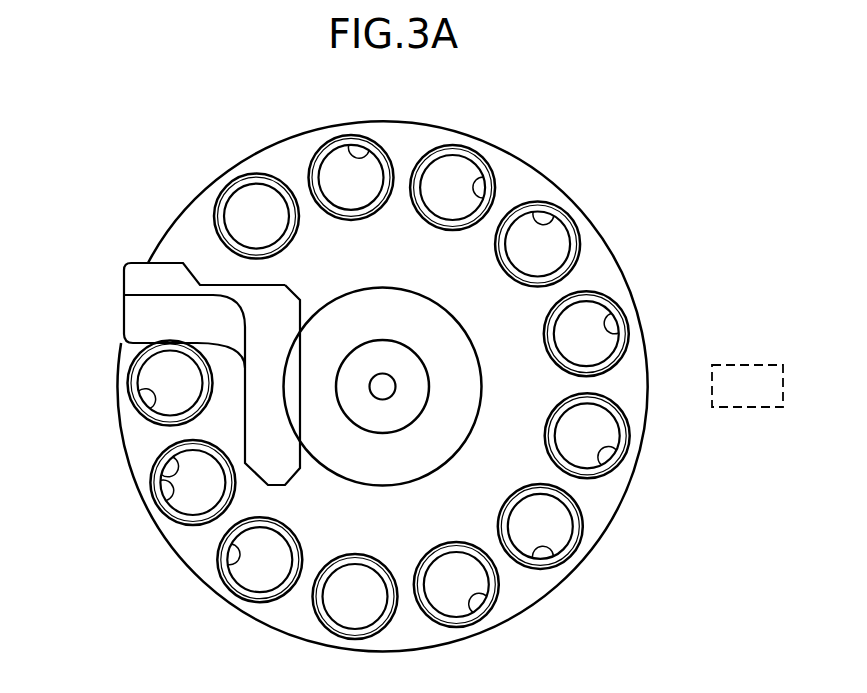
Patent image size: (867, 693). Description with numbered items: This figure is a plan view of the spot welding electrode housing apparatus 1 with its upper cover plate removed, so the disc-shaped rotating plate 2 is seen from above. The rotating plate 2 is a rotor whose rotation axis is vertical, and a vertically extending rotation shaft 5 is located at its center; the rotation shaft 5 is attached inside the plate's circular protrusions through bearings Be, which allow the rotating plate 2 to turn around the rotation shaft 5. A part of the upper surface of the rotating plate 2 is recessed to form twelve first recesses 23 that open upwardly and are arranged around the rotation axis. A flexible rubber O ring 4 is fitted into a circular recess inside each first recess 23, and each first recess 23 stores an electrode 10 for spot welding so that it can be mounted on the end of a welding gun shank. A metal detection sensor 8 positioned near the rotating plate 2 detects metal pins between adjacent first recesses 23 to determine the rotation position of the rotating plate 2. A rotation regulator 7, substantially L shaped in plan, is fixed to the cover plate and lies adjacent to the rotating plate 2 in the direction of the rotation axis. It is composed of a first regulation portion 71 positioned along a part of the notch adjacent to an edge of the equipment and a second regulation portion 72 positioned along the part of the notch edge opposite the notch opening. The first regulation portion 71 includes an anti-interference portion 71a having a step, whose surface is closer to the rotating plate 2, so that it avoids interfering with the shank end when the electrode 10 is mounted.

The spot welding electrode housing apparatus 1 is at (657, 161).
The rotating plate 2 is at (614, 250).
The O ring 4 is at (364, 151).
The rotation shaft 5 is at (383, 351).
The rotation regulator 7 is at (118, 264).
The metal detection sensor 8 is at (765, 365).
The electrode 10 is at (328, 141).
The first recess 23 is at (533, 217).
The first regulation portion 71 is at (124, 301).
The anti-interference portion 71a is at (138, 315).
The second regulation portion 72 is at (300, 296).
The bearing Be is at (452, 431).